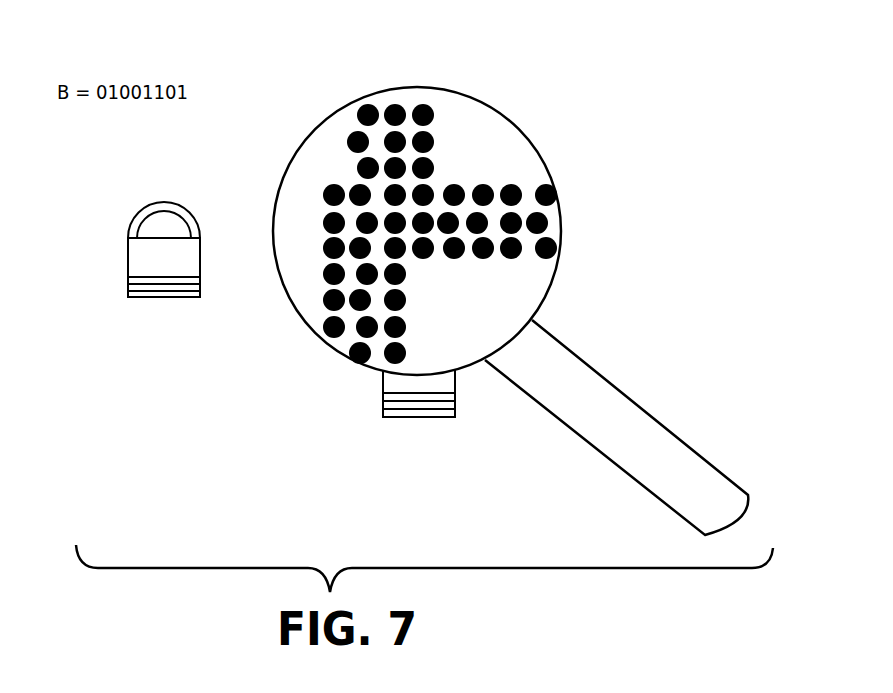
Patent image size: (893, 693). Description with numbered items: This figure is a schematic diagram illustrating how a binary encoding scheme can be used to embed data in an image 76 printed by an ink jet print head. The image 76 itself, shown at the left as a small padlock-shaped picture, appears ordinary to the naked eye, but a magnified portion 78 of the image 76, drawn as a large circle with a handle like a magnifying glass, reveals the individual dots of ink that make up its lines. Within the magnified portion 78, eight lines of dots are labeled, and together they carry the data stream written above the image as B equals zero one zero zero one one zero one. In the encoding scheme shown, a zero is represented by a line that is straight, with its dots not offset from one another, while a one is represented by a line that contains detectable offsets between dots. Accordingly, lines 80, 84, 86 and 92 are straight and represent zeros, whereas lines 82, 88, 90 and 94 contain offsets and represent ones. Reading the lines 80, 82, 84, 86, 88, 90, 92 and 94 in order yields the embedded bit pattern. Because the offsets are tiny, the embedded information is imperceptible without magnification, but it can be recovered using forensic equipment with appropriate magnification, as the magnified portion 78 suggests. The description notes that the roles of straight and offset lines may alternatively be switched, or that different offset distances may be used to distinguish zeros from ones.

The image 76 is at (202, 255).
The magnified portion 78 is at (548, 298).
The line 80 is at (332, 186).
The line 82 is at (362, 110).
The line 84 is at (392, 108).
The line 86 is at (427, 108).
The line 88 is at (457, 186).
The line 90 is at (488, 186).
The line 92 is at (517, 186).
The line 94 is at (548, 184).